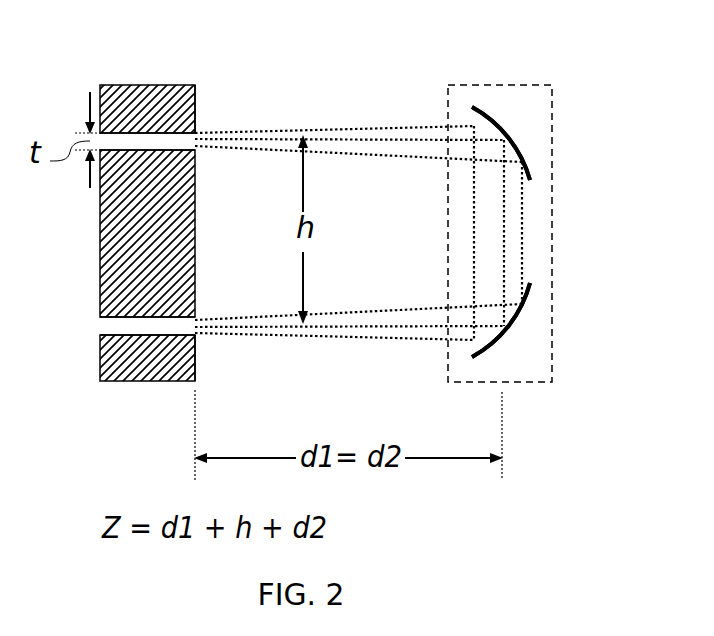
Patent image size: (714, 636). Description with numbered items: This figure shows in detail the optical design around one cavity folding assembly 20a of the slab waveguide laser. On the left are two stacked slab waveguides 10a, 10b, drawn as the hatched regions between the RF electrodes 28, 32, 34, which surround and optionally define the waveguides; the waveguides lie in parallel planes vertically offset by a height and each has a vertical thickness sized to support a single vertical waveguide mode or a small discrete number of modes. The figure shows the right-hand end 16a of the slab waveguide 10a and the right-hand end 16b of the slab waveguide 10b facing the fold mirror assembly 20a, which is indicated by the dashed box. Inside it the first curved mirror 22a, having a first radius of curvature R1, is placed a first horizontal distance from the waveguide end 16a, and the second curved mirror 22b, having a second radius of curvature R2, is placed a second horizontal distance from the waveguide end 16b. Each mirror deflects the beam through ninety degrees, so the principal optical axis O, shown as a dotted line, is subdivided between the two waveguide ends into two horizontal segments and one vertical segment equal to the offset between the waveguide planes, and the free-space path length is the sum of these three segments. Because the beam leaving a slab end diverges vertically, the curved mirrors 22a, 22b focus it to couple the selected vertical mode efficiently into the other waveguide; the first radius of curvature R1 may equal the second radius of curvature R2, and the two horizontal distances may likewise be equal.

The slab waveguide 10a is at (112, 86).
The slab waveguide 10b is at (112, 327).
The right-hand end of slab waveguide 16a is at (196, 96).
The right-hand end of slab waveguide 16b is at (197, 364).
The cavity folding assembly 20a is at (496, 86).
The first curved mirror 22a is at (523, 155).
The second curved mirror 22b is at (523, 307).
The RF electrode 28 is at (172, 143).
The RF electrode 32 is at (108, 215).
The RF electrode 34 is at (120, 380).
The first radius of curvature R1 is at (503, 123).
The second radius of curvature R2 is at (493, 348).
The principal optical axis O is at (414, 140).